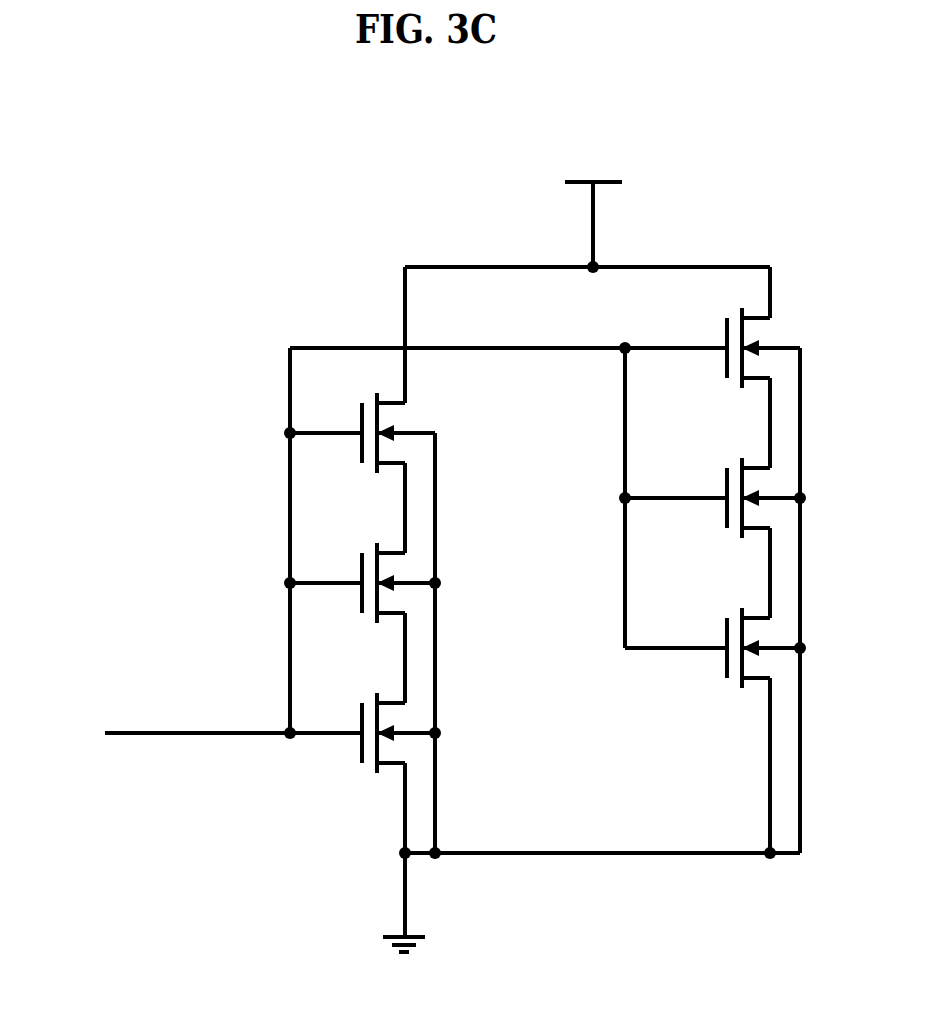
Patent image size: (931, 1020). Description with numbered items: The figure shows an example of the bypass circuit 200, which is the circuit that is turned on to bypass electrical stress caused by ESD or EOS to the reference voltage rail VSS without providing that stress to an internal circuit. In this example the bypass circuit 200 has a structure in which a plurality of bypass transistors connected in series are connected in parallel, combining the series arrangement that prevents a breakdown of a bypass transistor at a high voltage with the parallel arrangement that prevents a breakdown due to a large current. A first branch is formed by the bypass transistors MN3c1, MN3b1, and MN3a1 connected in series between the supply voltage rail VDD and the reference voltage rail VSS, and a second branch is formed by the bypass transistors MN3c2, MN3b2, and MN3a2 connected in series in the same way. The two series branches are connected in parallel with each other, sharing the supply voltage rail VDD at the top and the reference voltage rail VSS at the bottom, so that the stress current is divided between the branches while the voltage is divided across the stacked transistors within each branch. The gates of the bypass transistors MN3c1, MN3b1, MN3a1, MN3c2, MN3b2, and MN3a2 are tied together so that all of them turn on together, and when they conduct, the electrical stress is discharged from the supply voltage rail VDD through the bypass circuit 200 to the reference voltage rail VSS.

The bypass circuit 200 is at (197, 254).
The supply voltage rail VDD is at (592, 158).
The reference voltage rail VSS is at (602, 886).
The bypass transistor MN3c1 is at (362, 456).
The bypass transistor MN3b1 is at (362, 604).
The bypass transistor MN3a1 is at (362, 752).
The bypass transistor MN3c2 is at (712, 368).
The bypass transistor MN3b2 is at (712, 520).
The bypass transistor MN3a2 is at (712, 667).